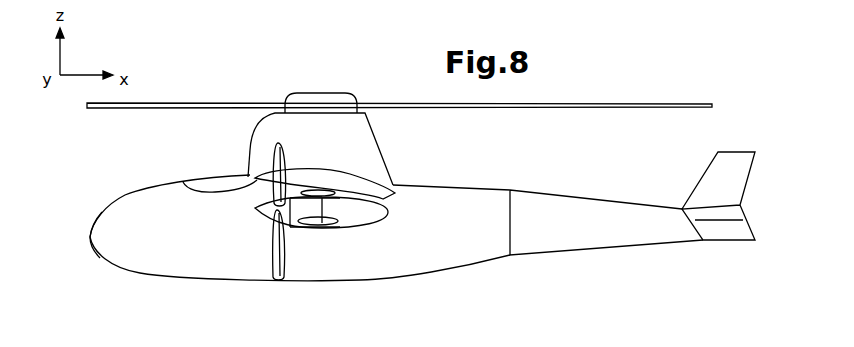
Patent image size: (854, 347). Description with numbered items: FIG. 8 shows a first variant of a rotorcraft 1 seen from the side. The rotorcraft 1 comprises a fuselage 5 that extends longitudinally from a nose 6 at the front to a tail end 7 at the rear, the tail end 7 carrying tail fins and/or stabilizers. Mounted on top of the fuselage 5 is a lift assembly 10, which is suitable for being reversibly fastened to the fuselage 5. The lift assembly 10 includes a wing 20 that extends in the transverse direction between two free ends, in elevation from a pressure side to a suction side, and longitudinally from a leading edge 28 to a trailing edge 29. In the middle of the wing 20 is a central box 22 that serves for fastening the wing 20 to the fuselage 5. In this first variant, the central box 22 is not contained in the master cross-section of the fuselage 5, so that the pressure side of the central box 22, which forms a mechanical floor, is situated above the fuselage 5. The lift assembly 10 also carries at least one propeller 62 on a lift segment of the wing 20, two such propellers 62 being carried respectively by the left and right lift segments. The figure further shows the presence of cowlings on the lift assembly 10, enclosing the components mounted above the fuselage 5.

The rotorcraft 1 is at (740, 121).
The fuselage 5 is at (185, 281).
The nose 6 is at (88, 237).
The tail end 7 is at (756, 243).
The lift assembly 10 is at (585, 91).
The wing 20 is at (347, 187).
The central box 22 is at (308, 158).
The leading edge 28 is at (184, 182).
The trailing edge 29 is at (387, 205).
The propeller 62 is at (247, 144).